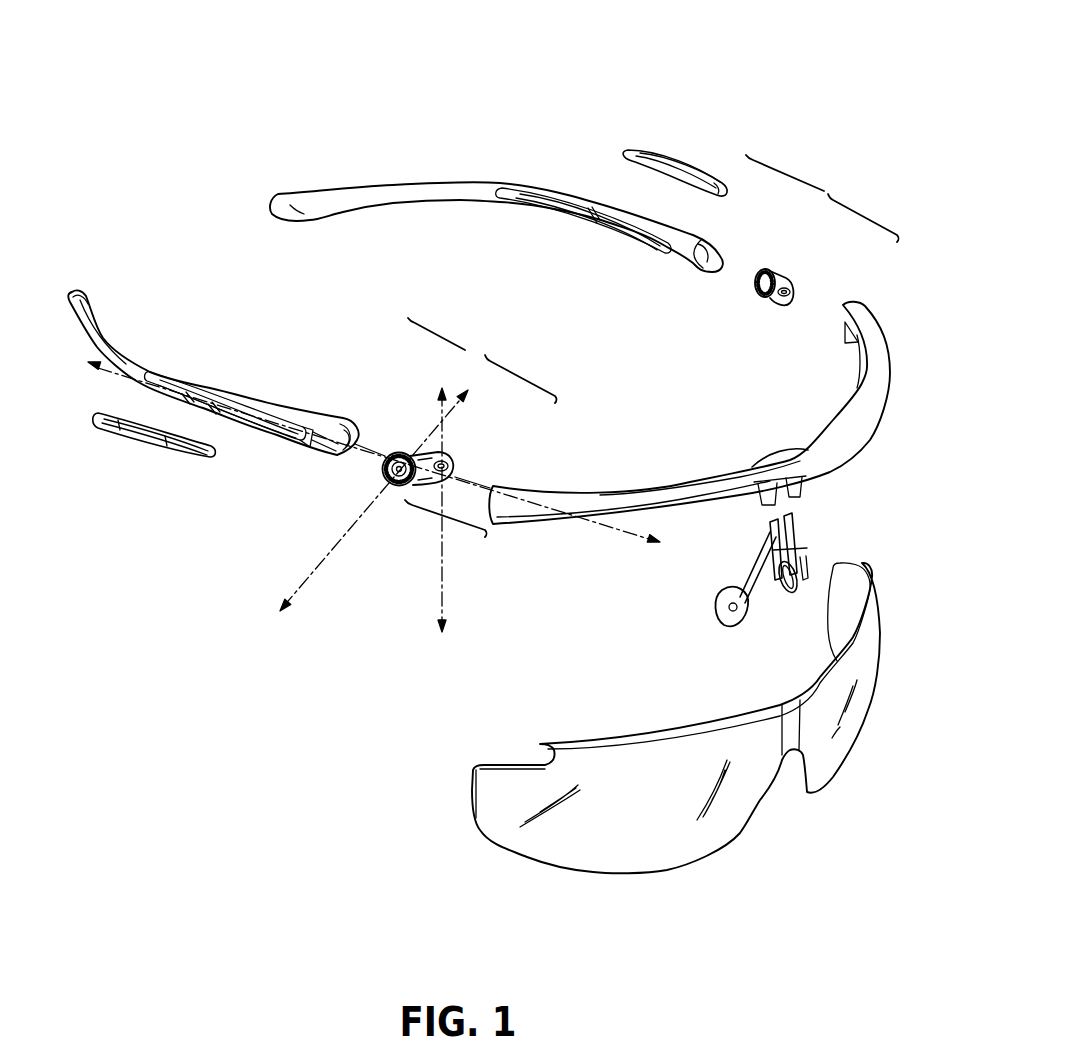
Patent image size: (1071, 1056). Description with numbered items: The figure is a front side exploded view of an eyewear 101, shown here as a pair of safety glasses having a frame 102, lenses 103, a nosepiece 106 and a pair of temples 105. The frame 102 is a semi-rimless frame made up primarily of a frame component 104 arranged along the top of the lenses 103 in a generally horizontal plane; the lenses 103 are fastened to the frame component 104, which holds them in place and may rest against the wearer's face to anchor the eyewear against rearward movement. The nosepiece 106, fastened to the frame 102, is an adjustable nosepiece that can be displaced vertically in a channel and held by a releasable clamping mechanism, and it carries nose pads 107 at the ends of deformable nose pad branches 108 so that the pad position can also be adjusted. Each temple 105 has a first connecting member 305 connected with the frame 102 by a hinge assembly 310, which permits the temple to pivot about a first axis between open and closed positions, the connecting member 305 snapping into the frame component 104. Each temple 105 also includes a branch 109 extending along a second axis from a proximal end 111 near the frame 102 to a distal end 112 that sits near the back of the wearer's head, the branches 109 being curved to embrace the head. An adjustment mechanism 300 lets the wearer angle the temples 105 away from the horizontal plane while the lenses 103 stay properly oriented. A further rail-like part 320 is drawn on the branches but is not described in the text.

The eyewear 101 is at (714, 74).
The frame 102 is at (872, 392).
The lenses 103 is at (833, 747).
The frame component 104 is at (845, 426).
The temples 105 is at (353, 190).
The nosepiece 106 is at (798, 553).
The nose pads 107 is at (783, 595).
The nose pad branches 108 is at (757, 572).
The branch 109 is at (417, 197).
The proximal end 111 is at (314, 443).
The distal end 112 is at (90, 316).
The adjustment mechanism 300 is at (653, 279).
The connecting member 305 is at (768, 271).
The hinge assembly 310 is at (438, 524).
The clip rail 320 is at (692, 256).